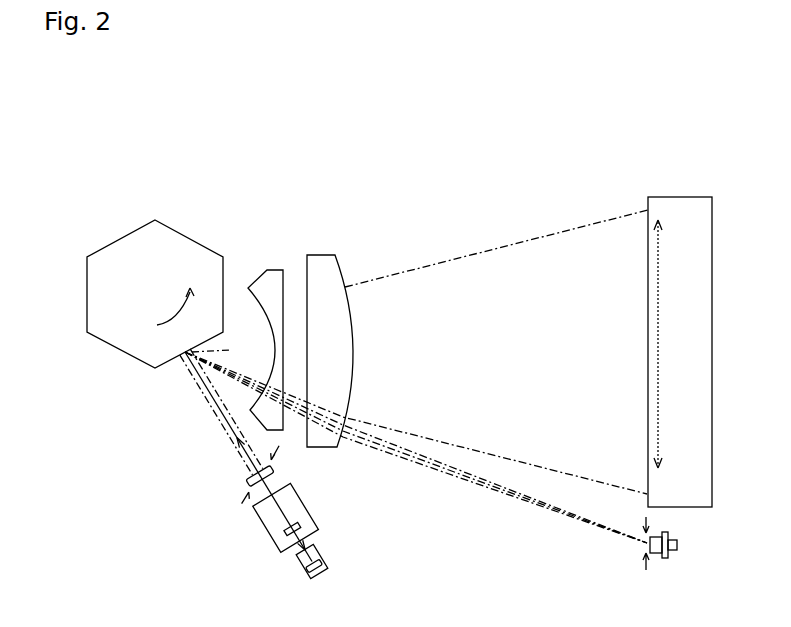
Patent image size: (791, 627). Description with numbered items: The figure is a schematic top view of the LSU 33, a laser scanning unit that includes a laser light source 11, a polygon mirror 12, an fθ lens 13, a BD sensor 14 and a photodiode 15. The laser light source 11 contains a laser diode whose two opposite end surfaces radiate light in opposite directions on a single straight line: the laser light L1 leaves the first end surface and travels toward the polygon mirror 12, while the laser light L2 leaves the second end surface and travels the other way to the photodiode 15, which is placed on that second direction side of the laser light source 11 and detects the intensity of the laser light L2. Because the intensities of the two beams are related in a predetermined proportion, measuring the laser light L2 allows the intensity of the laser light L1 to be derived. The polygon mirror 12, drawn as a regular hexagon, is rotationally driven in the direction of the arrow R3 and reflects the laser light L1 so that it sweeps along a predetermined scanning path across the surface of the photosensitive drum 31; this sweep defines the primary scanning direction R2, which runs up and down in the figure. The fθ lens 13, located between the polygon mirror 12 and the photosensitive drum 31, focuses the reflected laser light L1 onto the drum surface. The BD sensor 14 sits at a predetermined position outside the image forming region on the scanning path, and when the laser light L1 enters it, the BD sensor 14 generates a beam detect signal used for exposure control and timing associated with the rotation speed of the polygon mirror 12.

The laser light source 11 is at (274, 550).
The polygon mirror 12 is at (112, 243).
The fθ lens 13 is at (347, 247).
The BD sensor 14 is at (668, 553).
The photodiode 15 is at (305, 570).
The photosensitive drum 31 is at (680, 197).
The LSU 33 is at (57, 150).
The laser light L1 is at (244, 474).
The laser light L2 is at (314, 542).
The primary scanning direction R2 is at (660, 288).
The rotation direction of polygon mirror R3 is at (170, 312).